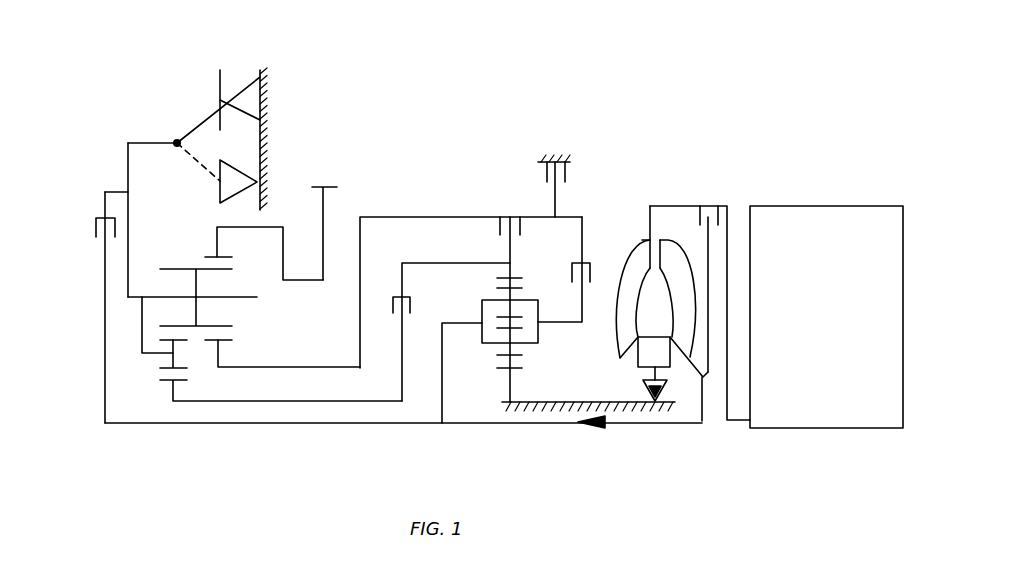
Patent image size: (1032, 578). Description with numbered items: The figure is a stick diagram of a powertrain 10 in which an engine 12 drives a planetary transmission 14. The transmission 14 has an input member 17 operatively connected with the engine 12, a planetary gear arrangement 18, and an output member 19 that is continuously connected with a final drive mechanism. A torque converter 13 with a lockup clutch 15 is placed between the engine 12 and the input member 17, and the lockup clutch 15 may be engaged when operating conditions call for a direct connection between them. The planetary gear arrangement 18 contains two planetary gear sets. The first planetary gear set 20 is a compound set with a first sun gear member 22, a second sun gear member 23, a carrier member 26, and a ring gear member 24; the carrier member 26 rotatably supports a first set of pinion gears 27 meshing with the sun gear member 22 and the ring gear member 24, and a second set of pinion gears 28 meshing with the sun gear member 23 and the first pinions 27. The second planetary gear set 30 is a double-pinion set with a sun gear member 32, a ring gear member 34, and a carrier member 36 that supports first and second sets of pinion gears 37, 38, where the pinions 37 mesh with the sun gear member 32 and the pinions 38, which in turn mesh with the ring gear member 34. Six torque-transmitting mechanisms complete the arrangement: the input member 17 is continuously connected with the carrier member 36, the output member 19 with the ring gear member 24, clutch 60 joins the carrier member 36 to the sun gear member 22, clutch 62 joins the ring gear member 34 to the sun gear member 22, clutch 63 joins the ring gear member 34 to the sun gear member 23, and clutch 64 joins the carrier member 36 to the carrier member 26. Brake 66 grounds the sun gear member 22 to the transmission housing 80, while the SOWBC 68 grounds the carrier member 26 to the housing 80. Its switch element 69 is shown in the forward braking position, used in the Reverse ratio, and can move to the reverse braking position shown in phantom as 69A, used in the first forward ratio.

The powertrain 10 is at (659, 91).
The engine 12 is at (841, 328).
The torque converter 13 is at (628, 241).
The planetary transmission 14 is at (549, 97).
The lockup clutch 15 is at (700, 232).
The input member 17 is at (662, 423).
The planetary gear arrangement 18 is at (381, 124).
The output member 19 is at (325, 232).
The first planetary gear set 20 is at (203, 373).
The first sun gear member 22 is at (225, 342).
The second sun gear member 23 is at (168, 383).
The ring gear member 24 is at (222, 253).
The carrier member 26 is at (142, 327).
The first set of pinion gears 27 is at (197, 312).
The second set of pinion gears 28 is at (170, 363).
The second planetary gear set 30 is at (533, 376).
The sun gear member 32 is at (502, 374).
The ring gear member 34 is at (515, 277).
The carrier member 36 is at (468, 325).
The first set of pinion gears 37 is at (513, 354).
The second set of pinion gears 38 is at (505, 297).
The second clutch 60 is at (590, 293).
The fourth clutch 62 is at (490, 239).
The first clutch 63 is at (393, 321).
The third clutch 64 is at (95, 248).
The first brake 66 is at (536, 174).
The SOWBC 68 is at (177, 59).
The switch element 69 is at (198, 122).
The reverse braking position 69A is at (203, 167).
The transmission housing 80 is at (262, 71).